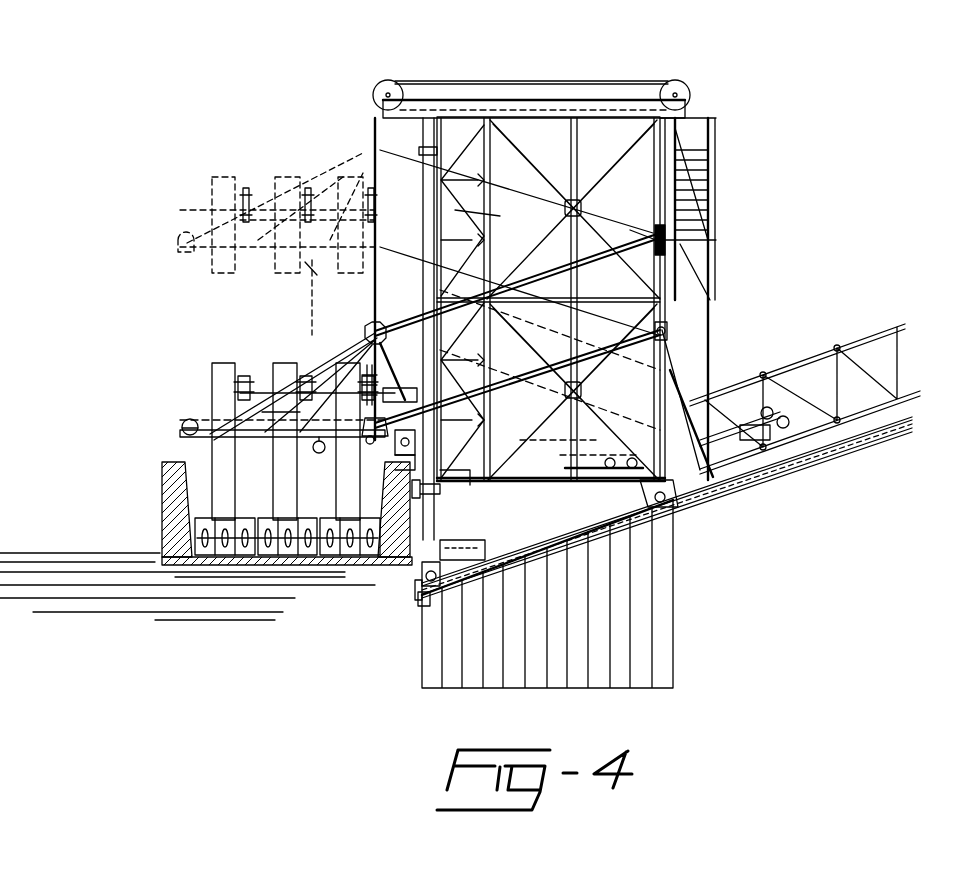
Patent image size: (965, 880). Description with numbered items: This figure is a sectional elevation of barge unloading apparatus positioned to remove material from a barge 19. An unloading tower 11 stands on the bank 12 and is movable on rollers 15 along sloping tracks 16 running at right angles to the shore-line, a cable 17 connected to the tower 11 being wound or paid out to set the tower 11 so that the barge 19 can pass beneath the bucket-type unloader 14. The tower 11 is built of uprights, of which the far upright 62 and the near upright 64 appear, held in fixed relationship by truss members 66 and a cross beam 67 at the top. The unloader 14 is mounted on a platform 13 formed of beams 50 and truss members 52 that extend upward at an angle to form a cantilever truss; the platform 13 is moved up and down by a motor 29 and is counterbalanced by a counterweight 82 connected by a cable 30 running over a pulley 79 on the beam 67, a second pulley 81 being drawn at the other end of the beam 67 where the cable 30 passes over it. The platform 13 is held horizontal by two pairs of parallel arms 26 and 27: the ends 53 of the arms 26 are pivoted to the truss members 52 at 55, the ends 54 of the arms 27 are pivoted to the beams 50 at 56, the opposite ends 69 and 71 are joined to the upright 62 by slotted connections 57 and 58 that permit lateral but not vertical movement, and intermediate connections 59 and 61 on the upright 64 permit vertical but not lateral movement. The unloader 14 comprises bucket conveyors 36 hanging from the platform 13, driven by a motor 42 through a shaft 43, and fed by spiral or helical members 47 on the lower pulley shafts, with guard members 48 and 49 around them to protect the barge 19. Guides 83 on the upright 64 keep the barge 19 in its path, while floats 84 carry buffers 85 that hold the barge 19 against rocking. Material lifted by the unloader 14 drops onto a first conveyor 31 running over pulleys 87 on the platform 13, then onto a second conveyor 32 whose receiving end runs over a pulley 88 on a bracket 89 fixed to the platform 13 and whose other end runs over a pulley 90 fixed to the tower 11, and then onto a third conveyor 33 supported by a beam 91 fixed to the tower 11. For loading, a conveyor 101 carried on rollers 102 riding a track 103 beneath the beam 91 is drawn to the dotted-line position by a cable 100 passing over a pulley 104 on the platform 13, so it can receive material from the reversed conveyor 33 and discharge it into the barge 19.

The unloading tower 11 is at (612, 140).
The bank 12 is at (790, 470).
The platform 13 is at (200, 256).
The bucket-type unloader 14 is at (212, 486).
The rollers 15 is at (686, 506).
The tracks 16 is at (882, 462).
The cable 17 is at (896, 442).
The barge 19 is at (165, 512).
The arms 26 is at (602, 279).
The arms 27 is at (575, 380).
The motor 29 is at (657, 234).
The cable 30 is at (508, 82).
The first conveyor 31 is at (186, 420).
The second conveyor 32 is at (520, 386).
The third conveyor 33 is at (866, 324).
The bucket conveyors 36 is at (212, 456).
The motor 42 is at (400, 388).
The shaft 43 is at (262, 376).
The spiral or helical members 47 is at (245, 528).
The guard member 48 is at (195, 540).
The guard member 49 is at (386, 496).
The beams 50 is at (270, 436).
The truss members 52 is at (312, 372).
The ends of arms 53 is at (390, 326).
The ends of arms 54 is at (385, 442).
The pivotal connection 55 is at (368, 332).
The pivotal connection 56 is at (368, 446).
The connection 57 is at (655, 238).
The connection 58 is at (668, 338).
The connection 59 is at (458, 345).
The connection 61 is at (458, 377).
The upright 62 is at (656, 160).
The upright 64 is at (422, 202).
The truss members 66 is at (456, 210).
The cross beam 67 is at (570, 100).
The end of arm 69 is at (640, 263).
The end of arm 71 is at (606, 343).
The pulley 79 is at (688, 88).
The left pulley 81 is at (385, 92).
The counterweight 82 is at (700, 186).
The guides 83 is at (422, 490).
The floats 84 is at (462, 536).
The buffers 85 is at (420, 566).
The pulleys 87 is at (183, 420).
The pulley 88 is at (452, 462).
The bracket 89 is at (396, 478).
The pulley 90 is at (687, 403).
The beam 91 is at (770, 366).
The cable 100 is at (310, 312).
The conveyor 101 is at (580, 452).
The rollers 102 is at (600, 470).
The track 103 is at (722, 462).
The pulley 104 is at (305, 262).